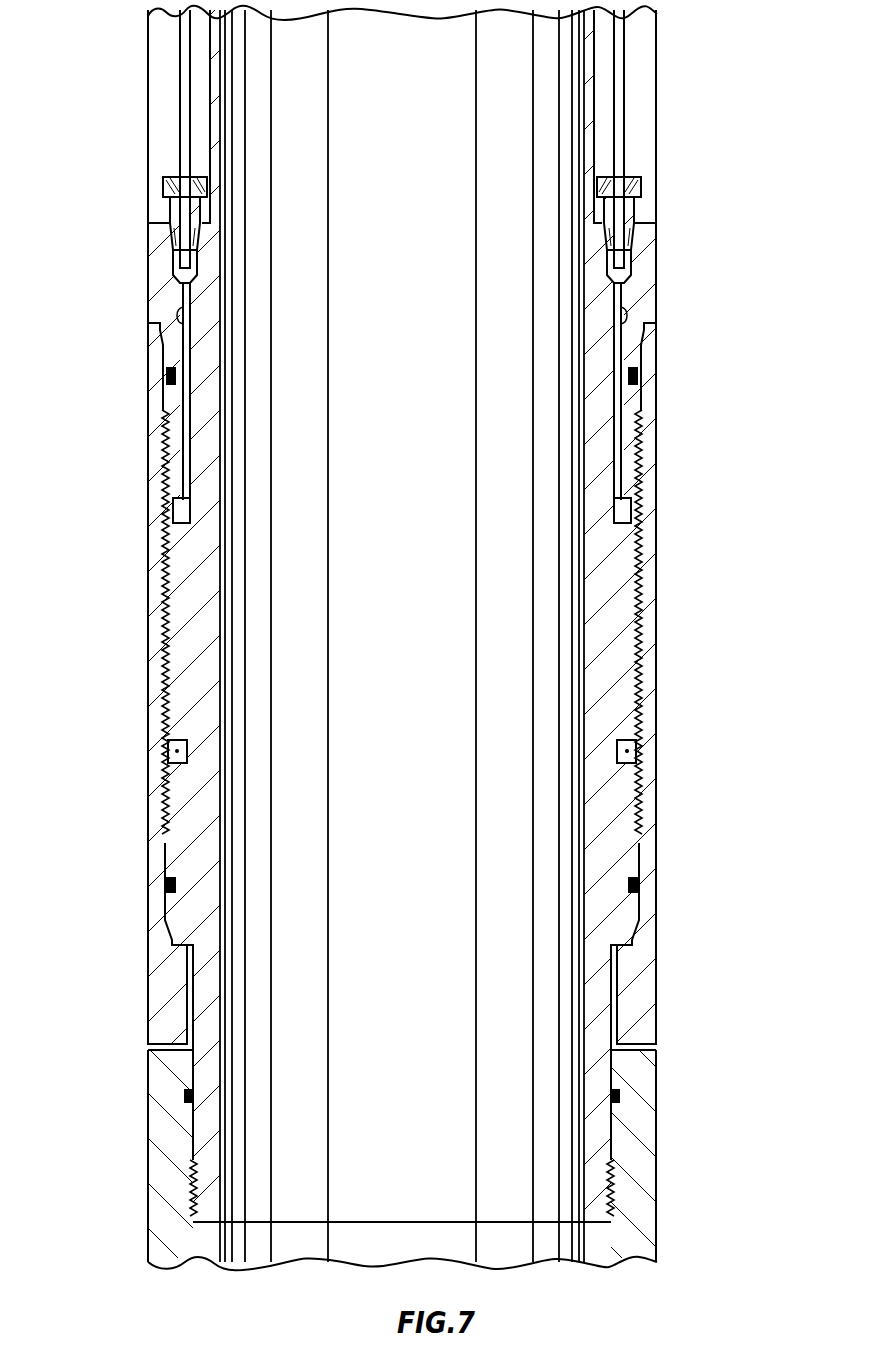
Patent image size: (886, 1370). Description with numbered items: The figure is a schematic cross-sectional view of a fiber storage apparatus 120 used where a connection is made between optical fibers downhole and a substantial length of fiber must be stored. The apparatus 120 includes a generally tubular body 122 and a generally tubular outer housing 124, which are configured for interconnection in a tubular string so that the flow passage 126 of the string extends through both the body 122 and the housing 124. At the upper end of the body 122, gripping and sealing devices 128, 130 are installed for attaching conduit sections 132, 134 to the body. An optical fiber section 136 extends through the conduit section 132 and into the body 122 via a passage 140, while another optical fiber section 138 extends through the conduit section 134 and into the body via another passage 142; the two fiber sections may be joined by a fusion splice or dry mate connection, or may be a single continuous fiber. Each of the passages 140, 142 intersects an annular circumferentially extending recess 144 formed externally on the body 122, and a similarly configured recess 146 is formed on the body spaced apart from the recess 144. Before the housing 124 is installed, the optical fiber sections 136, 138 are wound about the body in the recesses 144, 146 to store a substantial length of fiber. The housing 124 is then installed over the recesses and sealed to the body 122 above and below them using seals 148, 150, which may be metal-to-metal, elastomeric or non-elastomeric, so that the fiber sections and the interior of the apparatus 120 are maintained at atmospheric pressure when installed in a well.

The fiber storage apparatus 120 is at (735, 76).
The body 122 is at (600, 330).
The outer housing 124 is at (655, 1135).
The flow passage 126 is at (392, 788).
The gripping and sealing device 128 is at (163, 187).
The gripping and sealing device 130 is at (640, 187).
The conduit section 132 is at (178, 91).
The conduit section 134 is at (628, 118).
The optical fiber section 136 is at (180, 390).
The optical fiber section 138 is at (620, 397).
The passage 140 is at (190, 327).
The passage 142 is at (612, 327).
The annular recess 144 is at (615, 523).
The recess 146 is at (636, 751).
The seal 148 is at (167, 372).
The seal 150 is at (167, 885).